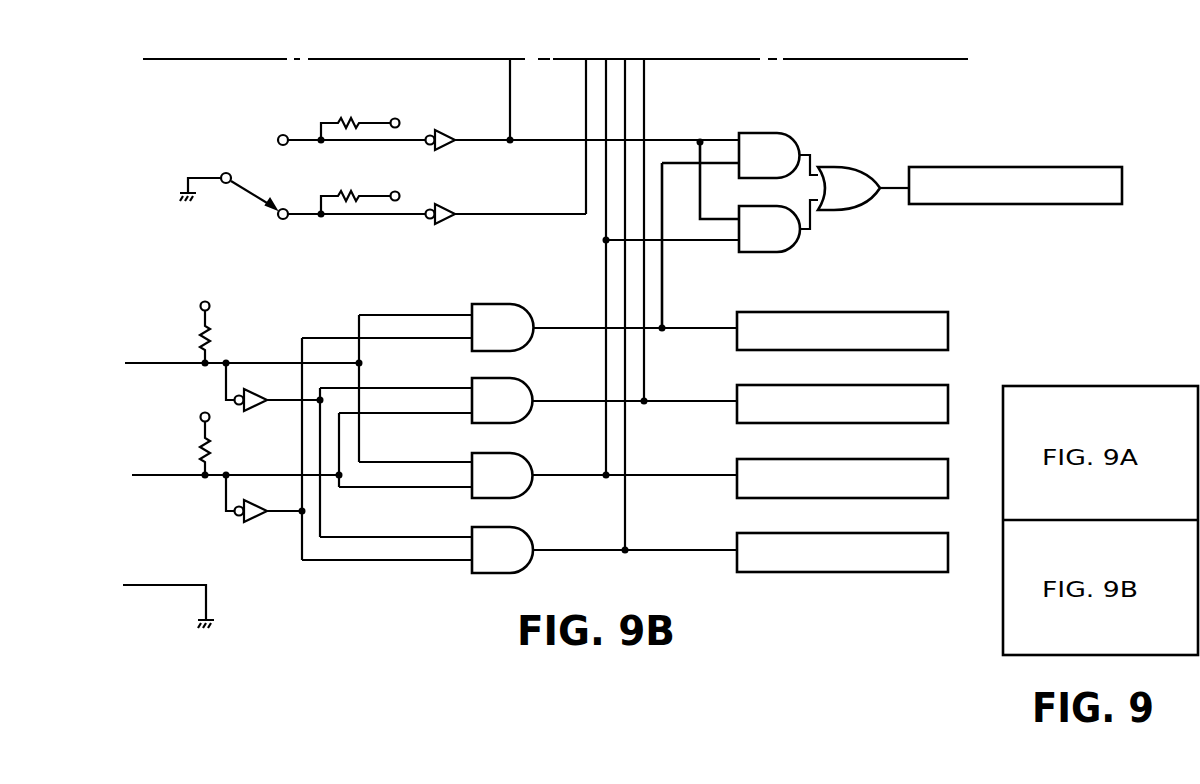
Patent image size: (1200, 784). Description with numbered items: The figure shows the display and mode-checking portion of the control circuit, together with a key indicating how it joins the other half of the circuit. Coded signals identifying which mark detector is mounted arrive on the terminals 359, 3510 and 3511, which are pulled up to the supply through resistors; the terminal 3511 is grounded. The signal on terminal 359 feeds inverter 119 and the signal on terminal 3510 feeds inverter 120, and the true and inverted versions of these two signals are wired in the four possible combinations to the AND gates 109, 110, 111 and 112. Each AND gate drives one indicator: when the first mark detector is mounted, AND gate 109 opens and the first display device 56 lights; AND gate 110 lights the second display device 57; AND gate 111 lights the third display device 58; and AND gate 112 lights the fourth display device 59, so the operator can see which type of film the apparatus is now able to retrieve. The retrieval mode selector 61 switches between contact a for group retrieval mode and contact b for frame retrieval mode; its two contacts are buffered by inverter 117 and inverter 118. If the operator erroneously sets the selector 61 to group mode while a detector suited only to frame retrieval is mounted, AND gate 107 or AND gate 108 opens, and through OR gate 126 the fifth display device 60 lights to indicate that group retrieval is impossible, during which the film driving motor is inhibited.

The retrieval mode selector 61 is at (248, 163).
The inverter 117 is at (449, 134).
The inverter 118 is at (452, 210).
The AND gate 107 is at (774, 133).
The AND gate 108 is at (788, 250).
The OR gate 126 is at (858, 164).
The fifth display device 60 is at (1062, 205).
The first display device 56 is at (893, 312).
The second display device 57 is at (885, 385).
The third display device 58 is at (885, 459).
The fourth display device 59 is at (885, 533).
The AND gate 109 is at (526, 304).
The AND gate 110 is at (518, 378).
The AND gate 111 is at (522, 454).
The AND gate 112 is at (526, 528).
The inverter 119 is at (259, 412).
The inverter 120 is at (255, 523).
The terminal 359 is at (145, 360).
The terminal 3510 is at (148, 473).
The terminal 3511 is at (147, 583).